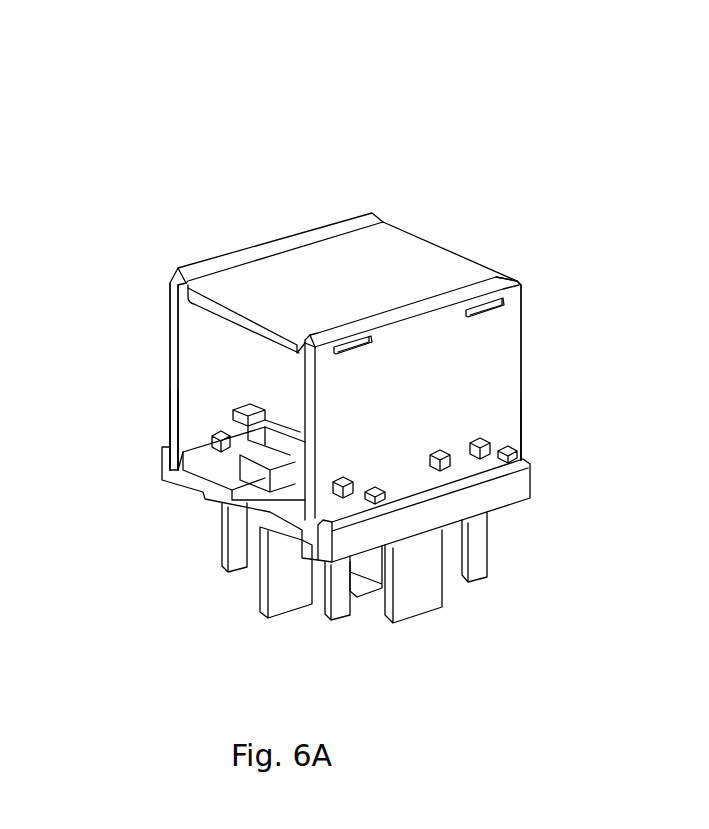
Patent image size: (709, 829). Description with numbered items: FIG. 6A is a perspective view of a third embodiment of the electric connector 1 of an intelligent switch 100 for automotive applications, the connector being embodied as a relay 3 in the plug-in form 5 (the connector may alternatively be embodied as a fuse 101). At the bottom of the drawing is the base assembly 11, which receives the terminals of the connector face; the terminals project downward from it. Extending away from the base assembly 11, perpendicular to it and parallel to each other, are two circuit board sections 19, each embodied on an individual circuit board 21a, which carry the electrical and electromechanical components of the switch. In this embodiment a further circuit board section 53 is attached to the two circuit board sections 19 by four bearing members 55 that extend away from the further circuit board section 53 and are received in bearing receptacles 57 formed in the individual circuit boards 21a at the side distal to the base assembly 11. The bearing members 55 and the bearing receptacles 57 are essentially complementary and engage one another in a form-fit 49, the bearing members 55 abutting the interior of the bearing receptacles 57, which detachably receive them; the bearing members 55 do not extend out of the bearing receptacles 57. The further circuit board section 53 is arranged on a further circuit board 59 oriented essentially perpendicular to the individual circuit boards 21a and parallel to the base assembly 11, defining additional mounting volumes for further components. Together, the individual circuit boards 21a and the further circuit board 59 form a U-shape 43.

The intelligent switch 100 is at (283, 156).
The fuse 101 is at (283, 156).
The electric connector 1 is at (286, 221).
The relay 3 is at (286, 221).
The plug-in form 5 is at (286, 221).
The U-shape 43 is at (333, 205).
The further circuit board 59 is at (393, 238).
The bearing members 55 is at (367, 340).
The further circuit board section 53 is at (465, 277).
The form-fit 49 is at (499, 278).
The bearing receptacles 57 is at (498, 306).
The circuit board sections 19 is at (177, 353).
The individual circuit boards 21a is at (177, 395).
The base assembly 11 is at (513, 488).